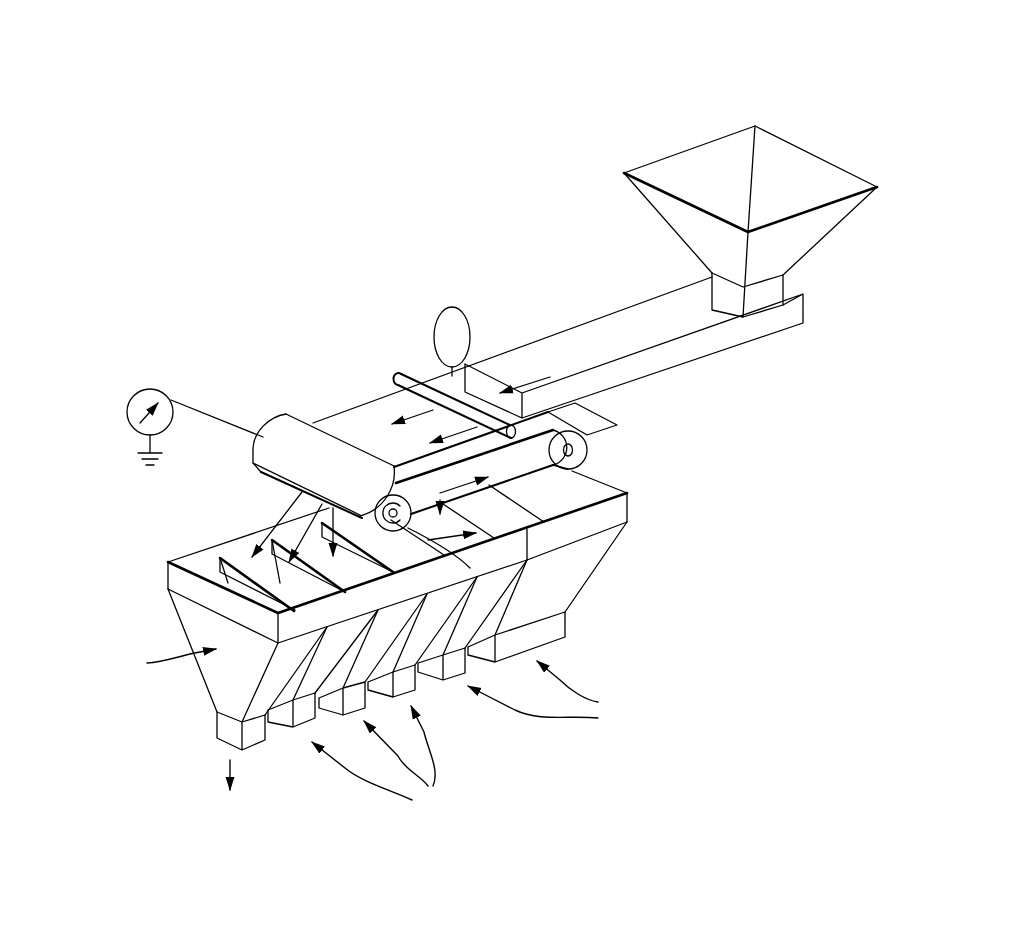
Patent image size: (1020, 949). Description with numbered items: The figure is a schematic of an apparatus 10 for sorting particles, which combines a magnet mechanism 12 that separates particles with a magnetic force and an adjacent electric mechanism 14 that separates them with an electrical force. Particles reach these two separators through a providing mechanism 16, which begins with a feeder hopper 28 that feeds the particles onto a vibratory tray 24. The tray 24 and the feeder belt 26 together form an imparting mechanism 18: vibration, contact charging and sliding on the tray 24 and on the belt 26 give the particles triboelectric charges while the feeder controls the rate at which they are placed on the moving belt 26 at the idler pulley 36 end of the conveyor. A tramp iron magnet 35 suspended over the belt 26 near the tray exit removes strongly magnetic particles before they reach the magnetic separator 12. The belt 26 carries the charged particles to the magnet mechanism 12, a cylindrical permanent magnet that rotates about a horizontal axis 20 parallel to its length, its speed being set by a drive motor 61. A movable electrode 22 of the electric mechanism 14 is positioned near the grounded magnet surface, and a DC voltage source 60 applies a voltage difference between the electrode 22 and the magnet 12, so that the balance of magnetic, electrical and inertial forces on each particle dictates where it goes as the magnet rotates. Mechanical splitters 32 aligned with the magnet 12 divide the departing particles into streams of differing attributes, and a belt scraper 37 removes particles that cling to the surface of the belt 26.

The apparatus 10 is at (356, 118).
The magnet mechanism 12 is at (385, 500).
The electric mechanism 14 is at (122, 216).
The providing mechanism 16 is at (680, 237).
The imparting mechanism 18 is at (545, 348).
The horizontal axis 20 is at (416, 524).
The electrode 22 is at (279, 420).
The vibratory tray 24 is at (710, 346).
The feeder belt 26 is at (545, 502).
The feeder hopper 28 is at (712, 155).
The mechanical splitters 32 is at (250, 539).
The tramp iron magnet 35 is at (394, 370).
The idler pulley 36 is at (592, 457).
The belt scraper 37 is at (617, 437).
The DC voltage source 60 is at (120, 385).
The drive motor 61 is at (452, 304).